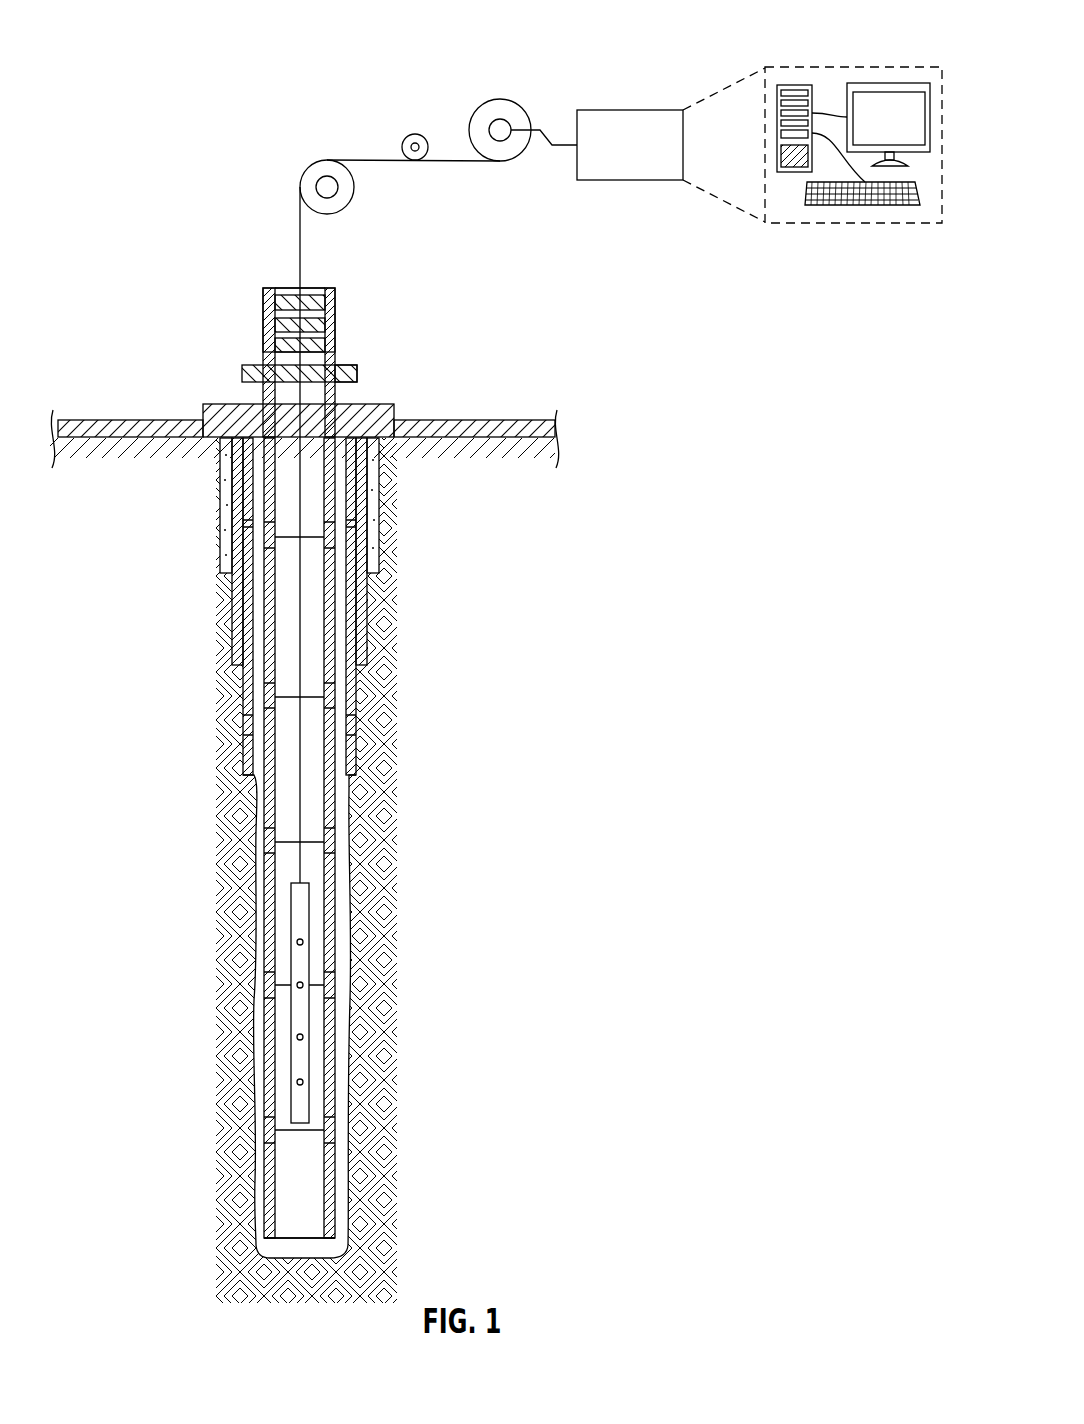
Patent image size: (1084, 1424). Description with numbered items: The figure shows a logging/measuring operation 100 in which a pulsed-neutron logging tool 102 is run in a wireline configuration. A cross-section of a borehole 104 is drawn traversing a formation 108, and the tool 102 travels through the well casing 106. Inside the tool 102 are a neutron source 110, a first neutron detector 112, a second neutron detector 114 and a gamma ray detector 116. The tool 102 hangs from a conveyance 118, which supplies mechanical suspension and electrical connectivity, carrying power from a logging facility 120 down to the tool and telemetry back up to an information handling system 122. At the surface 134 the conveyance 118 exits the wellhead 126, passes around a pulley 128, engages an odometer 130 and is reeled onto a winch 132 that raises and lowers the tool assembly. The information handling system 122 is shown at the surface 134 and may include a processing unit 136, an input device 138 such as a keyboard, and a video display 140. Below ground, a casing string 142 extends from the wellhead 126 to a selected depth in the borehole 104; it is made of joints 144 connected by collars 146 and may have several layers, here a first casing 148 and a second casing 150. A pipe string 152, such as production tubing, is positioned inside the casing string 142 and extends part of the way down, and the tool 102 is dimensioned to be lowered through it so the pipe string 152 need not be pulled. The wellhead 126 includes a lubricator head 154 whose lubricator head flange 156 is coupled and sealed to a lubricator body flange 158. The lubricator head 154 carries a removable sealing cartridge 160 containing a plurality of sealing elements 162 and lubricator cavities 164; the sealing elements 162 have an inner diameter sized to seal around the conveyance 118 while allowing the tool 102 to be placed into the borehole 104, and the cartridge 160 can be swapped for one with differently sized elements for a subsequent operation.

The logging/measuring operation 100 is at (633, 955).
The pulsed-neutron logging tool 102 is at (283, 1023).
The borehole 104 is at (188, 850).
The well casing 106 is at (363, 810).
The formation 108 is at (553, 755).
The neutron source 110 is at (303, 942).
The first neutron detector 112 is at (303, 985).
The second neutron detector 114 is at (303, 1037).
The gamma ray detector 116 is at (303, 1082).
The conveyance 118 is at (302, 247).
The logging facility 120 is at (631, 110).
The information handling system 122 is at (834, 66).
The wellhead 126 is at (438, 293).
The pulley 128 is at (313, 165).
The odometer 130 is at (417, 134).
The winch 132 is at (499, 99).
The surface 134 is at (121, 420).
The processing unit 136 is at (803, 85).
The input device 138 is at (853, 205).
The video display 140 is at (907, 83).
The casing string 142 is at (223, 651).
The joint 144 is at (243, 693).
The collar 146 is at (248, 735).
The first casing 148 is at (353, 693).
The second casing 150 is at (365, 637).
The pipe string 152 is at (338, 1195).
The lubricator head 154 is at (438, 372).
The lubricator head flange 156 is at (357, 368).
The lubricator body flange 158 is at (357, 378).
The sealing cartridge 160 is at (322, 284).
The sealing elements 162 is at (280, 323).
The lubricator cavities 164 is at (318, 337).